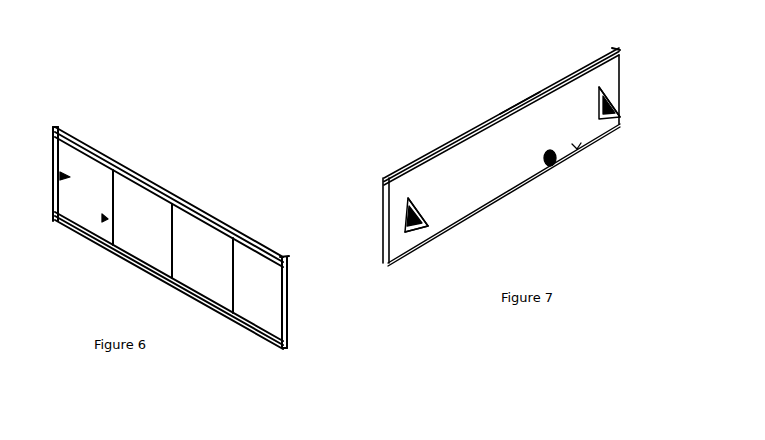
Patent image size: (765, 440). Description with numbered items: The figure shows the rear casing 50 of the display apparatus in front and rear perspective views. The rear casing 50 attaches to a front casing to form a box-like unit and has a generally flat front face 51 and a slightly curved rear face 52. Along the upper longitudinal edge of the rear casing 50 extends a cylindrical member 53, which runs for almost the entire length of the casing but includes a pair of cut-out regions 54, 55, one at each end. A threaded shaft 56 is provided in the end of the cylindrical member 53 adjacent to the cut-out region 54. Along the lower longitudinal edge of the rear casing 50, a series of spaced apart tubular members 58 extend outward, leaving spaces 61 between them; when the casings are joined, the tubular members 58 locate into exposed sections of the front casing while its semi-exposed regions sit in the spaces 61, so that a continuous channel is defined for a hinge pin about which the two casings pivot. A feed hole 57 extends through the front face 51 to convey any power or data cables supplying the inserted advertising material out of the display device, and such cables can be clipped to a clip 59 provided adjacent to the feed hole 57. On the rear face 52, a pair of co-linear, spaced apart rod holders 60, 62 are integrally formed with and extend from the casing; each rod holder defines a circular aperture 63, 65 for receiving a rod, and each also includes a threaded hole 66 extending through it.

In FIG. 6, the rear casing 50 is at (264, 241).
In FIG. 7, the rear casing 50 is at (619, 66).
In FIG. 6, the front face 51 is at (268, 299).
In FIG. 7, the front face 51 is at (383, 176).
In FIG. 7, the rear face 52 is at (603, 127).
In FIG. 6, the cylindrical member 53 is at (123, 167).
In FIG. 7, the cylindrical member 53 is at (412, 166).
In FIG. 6, the cut-out region 54 is at (288, 254).
In FIG. 7, the cut-out region 55 is at (620, 47).
In FIG. 6, the threaded shaft 56 is at (289, 261).
In FIG. 6, the feed hole 57 is at (103, 243).
In FIG. 7, the feed hole 57 is at (577, 149).
In FIG. 6, the tubular members 58 is at (62, 221).
In FIG. 7, the clip 59 is at (550, 170).
In FIG. 7, the rod holder 60 is at (432, 238).
In FIG. 6, the spaces 61 is at (116, 246).
In FIG. 7, the spaces 61 is at (456, 57).
In FIG. 7, the rod holder 62 is at (625, 100).
In FIG. 7, the circular aperture 63 is at (625, 112).
In FIG. 7, the circular aperture 65 is at (623, 124).
In FIG. 7, the threaded hole 66 is at (437, 243).